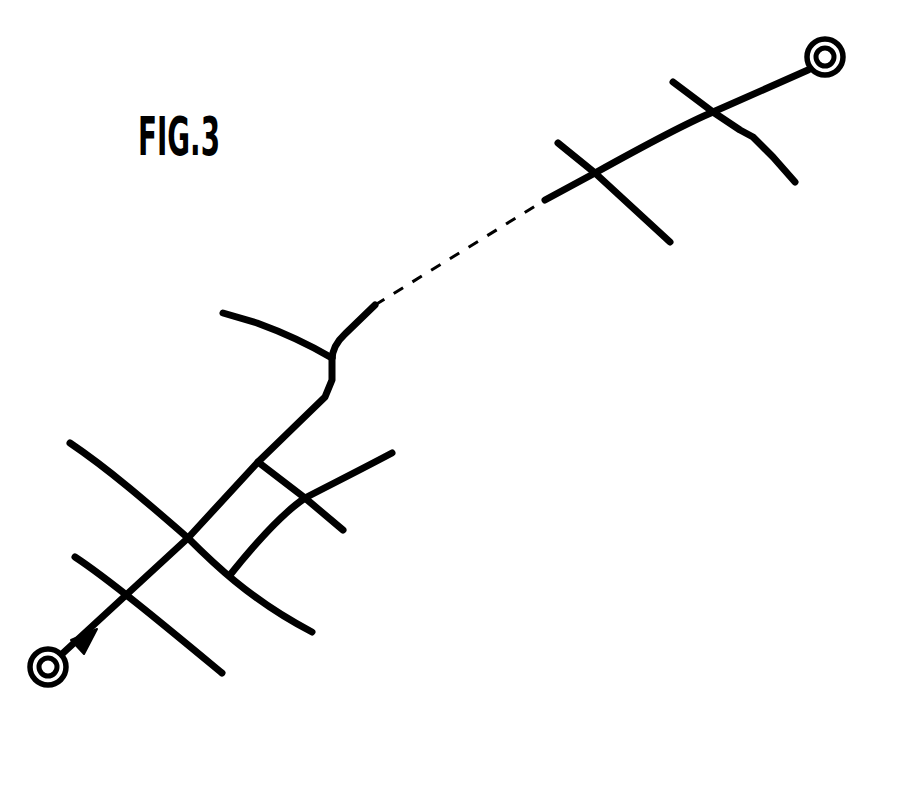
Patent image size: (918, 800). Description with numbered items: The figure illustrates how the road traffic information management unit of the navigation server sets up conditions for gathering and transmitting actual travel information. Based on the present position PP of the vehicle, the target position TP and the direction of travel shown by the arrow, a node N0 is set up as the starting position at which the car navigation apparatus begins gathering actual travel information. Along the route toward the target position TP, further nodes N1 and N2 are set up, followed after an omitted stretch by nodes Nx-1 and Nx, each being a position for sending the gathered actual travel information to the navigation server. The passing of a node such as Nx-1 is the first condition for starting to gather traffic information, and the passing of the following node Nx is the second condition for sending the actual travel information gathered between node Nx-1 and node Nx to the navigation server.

The present position PP is at (52, 686).
The target position TP is at (823, 77).
The node N0 is at (188, 537).
The node N1 is at (258, 462).
The node N2 is at (336, 357).
The node Nx-1 is at (595, 176).
The node Nx is at (713, 118).